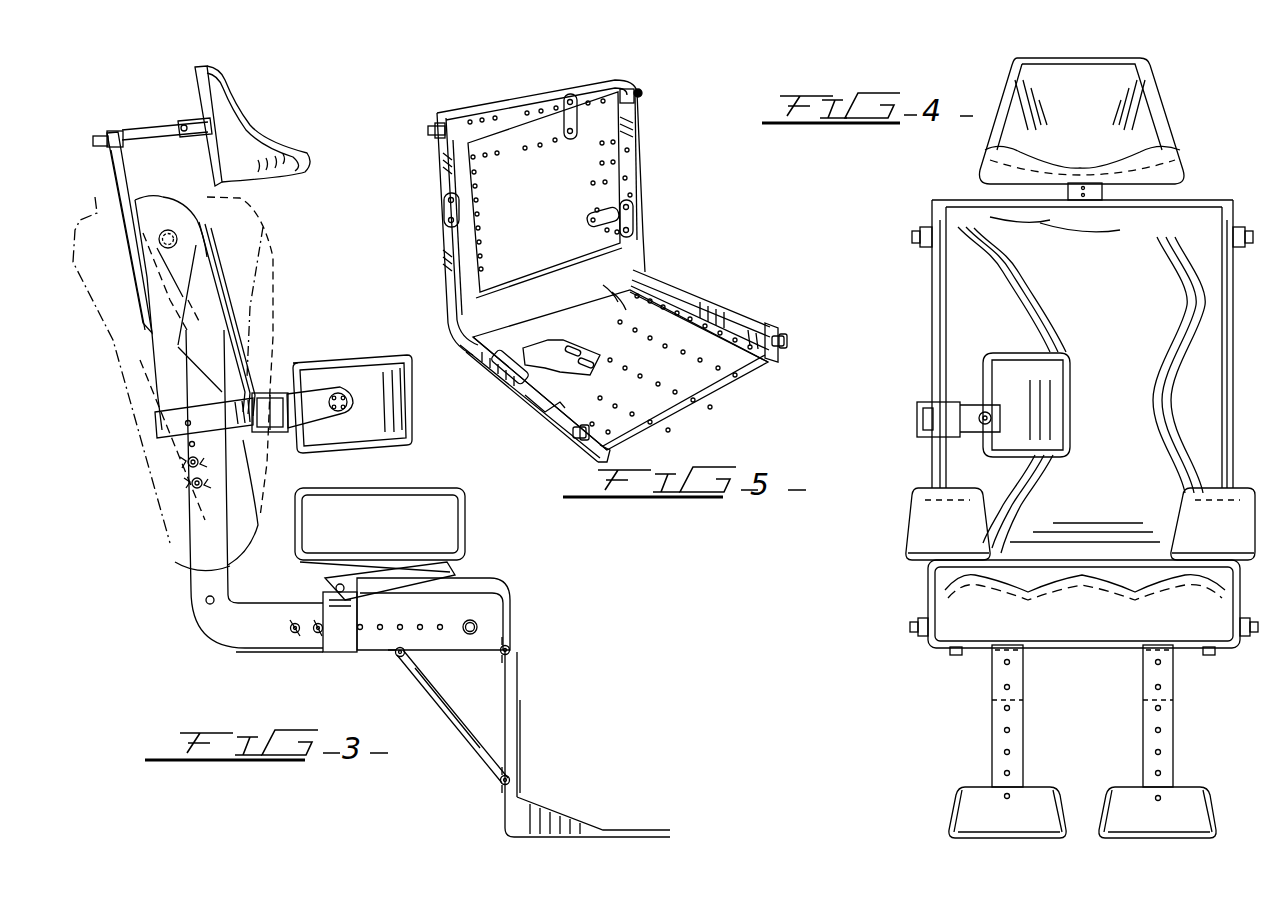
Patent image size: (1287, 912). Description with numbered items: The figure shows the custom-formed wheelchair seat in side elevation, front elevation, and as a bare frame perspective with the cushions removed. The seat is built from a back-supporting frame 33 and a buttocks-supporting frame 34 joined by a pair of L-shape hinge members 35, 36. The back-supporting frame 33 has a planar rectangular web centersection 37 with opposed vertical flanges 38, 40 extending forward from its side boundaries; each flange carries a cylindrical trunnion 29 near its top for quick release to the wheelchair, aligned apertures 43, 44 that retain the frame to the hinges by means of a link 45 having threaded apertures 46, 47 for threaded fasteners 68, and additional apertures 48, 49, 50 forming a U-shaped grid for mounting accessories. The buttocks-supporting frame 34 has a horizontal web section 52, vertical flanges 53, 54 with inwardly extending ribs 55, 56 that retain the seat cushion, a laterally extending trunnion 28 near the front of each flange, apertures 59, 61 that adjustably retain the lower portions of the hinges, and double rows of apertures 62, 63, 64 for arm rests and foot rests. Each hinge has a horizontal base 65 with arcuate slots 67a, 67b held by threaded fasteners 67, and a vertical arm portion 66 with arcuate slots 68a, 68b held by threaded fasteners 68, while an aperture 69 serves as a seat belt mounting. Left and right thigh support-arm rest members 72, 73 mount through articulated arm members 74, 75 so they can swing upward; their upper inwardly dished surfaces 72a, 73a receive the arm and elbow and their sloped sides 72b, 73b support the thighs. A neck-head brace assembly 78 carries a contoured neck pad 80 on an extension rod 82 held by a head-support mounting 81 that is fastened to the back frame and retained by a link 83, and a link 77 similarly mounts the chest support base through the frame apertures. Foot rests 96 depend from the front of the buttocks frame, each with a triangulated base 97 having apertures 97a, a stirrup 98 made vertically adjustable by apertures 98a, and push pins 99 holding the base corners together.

In FIG. 5, the trunnion 28 is at (580, 437).
In FIG. 5, the trunnion 29 is at (432, 126).
In FIG. 4, the trunnion 29 is at (1082, 237).
In FIG. 5, the back-supporting frame 33 is at (645, 112).
In FIG. 5, the buttocks-supporting frame 34 is at (712, 297).
In FIG. 3, the L-shape hinge member 35 is at (201, 626).
In FIG. 5, the L-shape hinge member 35 is at (453, 327).
In FIG. 5, the L-shape hinge member 36 is at (647, 252).
In FIG. 5, the web centersection 37 is at (545, 199).
In FIG. 5, the vertical flange 38 is at (440, 165).
In FIG. 5, the vertical flange 40 is at (641, 92).
In FIG. 5, the apertures 43 is at (452, 187).
In FIG. 5, the apertures 44 is at (628, 150).
In FIG. 5, the link 45 is at (633, 213).
In FIG. 5, the threaded aperture 46 is at (622, 205).
In FIG. 5, the threaded aperture 47 is at (633, 230).
In FIG. 5, the apertures 48 is at (509, 147).
In FIG. 5, the apertures 49 is at (597, 165).
In FIG. 5, the apertures 50 is at (477, 200).
In FIG. 5, the web section 52 is at (648, 369).
In FIG. 5, the vertical flange 53 is at (580, 437).
In FIG. 5, the vertical flange 54 is at (747, 322).
In FIG. 5, the rib 55 is at (577, 393).
In FIG. 5, the rib 56 is at (686, 292).
In FIG. 5, the apertures 59 is at (570, 407).
In FIG. 5, the apertures 61 is at (722, 322).
In FIG. 5, the apertures 62 is at (600, 287).
In FIG. 5, the apertures 63 is at (563, 373).
In FIG. 5, the apertures 64 is at (663, 373).
In FIG. 3, the base 65 is at (266, 640).
In FIG. 3, the arm portion 66 is at (192, 547).
In FIG. 3, the threaded fasteners 67 is at (316, 623).
In FIG. 3, the arcuate slot 67a is at (294, 640).
In FIG. 3, the arcuate slot 67b is at (321, 636).
In FIG. 3, the threaded fasteners 68 is at (188, 462).
In FIG. 3, the arcuate slot 68a is at (192, 484).
In FIG. 3, the arcuate slot 68b is at (196, 462).
In FIG. 3, the aperture 69 is at (206, 600).
In FIG. 4, the thigh support-arm rest member 72 is at (915, 523).
In FIG. 4, the upper inwardly dished surface 72a is at (927, 487).
In FIG. 4, the sloped side 72b is at (993, 513).
In FIG. 4, the thigh support-arm rest member 73 is at (1250, 510).
In FIG. 4, the upper inwardly dished surface 73a is at (1227, 487).
In FIG. 4, the sloped side 73b is at (1177, 512).
In FIG. 4, the articulated arm member 74 is at (927, 643).
In FIG. 4, the articulated arm member 75 is at (950, 655).
In FIG. 5, the link 77 is at (590, 222).
In FIG. 3, the neck-head brace assembly 78 is at (112, 124).
In FIG. 3, the neck pad 80 is at (238, 140).
In FIG. 4, the neck pad 80 is at (1150, 120).
In FIG. 3, the head-support mounting 81 is at (125, 167).
In FIG. 4, the head-support mounting 81 is at (1097, 193).
In FIG. 3, the extension rod 82 is at (130, 222).
In FIG. 5, the link 83 is at (577, 123).
In FIG. 3, the foot rest 96 is at (517, 720).
In FIG. 3, the triangulated base 97 is at (437, 697).
In FIG. 4, the triangulated base 97 is at (992, 677).
In FIG. 4, the apertures 97a is at (1010, 662).
In FIG. 3, the stirrup 98 is at (560, 812).
In FIG. 4, the stirrup 98 is at (953, 820).
In FIG. 4, the apertures 98a is at (1007, 730).
In FIG. 3, the push pins 99 is at (512, 648).